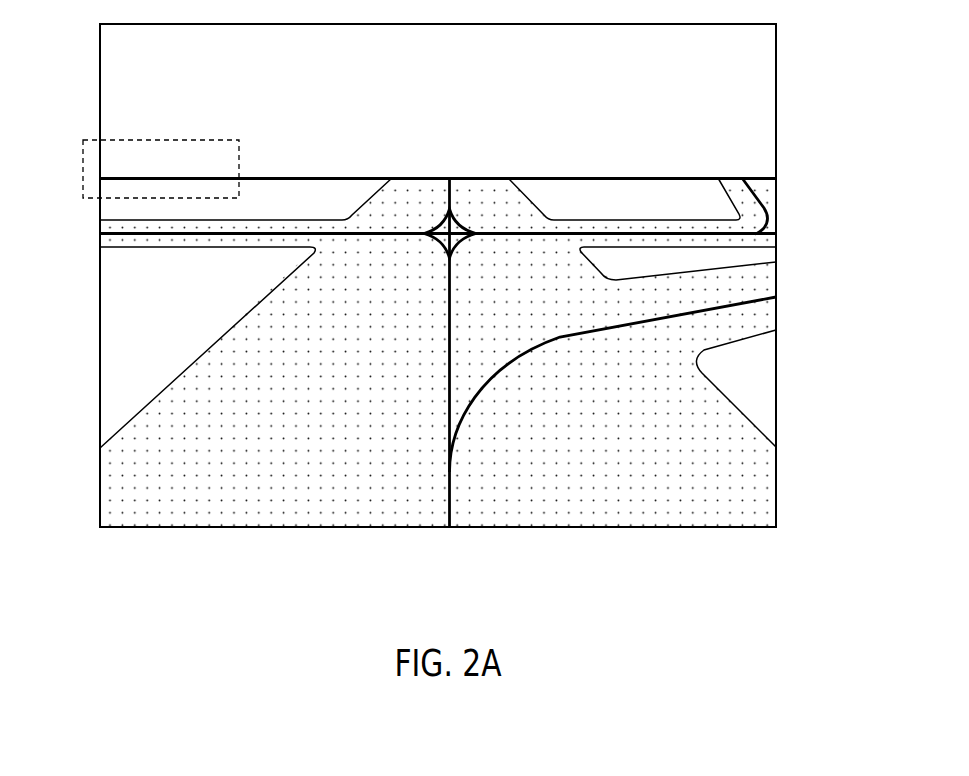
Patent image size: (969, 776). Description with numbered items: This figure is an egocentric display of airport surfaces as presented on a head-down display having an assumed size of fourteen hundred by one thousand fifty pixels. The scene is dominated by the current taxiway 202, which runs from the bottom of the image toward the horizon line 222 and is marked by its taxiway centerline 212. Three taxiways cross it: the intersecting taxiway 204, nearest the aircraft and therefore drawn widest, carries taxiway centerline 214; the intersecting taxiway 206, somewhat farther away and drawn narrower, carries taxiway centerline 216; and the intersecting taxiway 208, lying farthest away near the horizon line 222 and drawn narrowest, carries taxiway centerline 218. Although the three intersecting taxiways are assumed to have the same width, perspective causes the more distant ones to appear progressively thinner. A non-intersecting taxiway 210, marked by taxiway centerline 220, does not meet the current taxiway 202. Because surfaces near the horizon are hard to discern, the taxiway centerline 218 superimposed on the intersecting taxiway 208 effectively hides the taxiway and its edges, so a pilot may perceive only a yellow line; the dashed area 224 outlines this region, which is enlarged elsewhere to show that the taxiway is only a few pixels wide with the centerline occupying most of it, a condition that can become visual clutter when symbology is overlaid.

The current taxiway 202 is at (633, 488).
The intersecting taxiway 204 is at (780, 315).
The intersecting taxiway 206 is at (780, 240).
The intersecting taxiway 208 is at (780, 178).
The non-intersecting taxiway 210 is at (731, 202).
The taxiway centerline 212 is at (446, 388).
The taxiway centerline 214 is at (704, 313).
The taxiway centerline 216 is at (225, 245).
The taxiway centerline 218 is at (98, 179).
The taxiway centerline 220 is at (755, 187).
The horizon line 222 is at (341, 176).
The area 224 is at (91, 138).